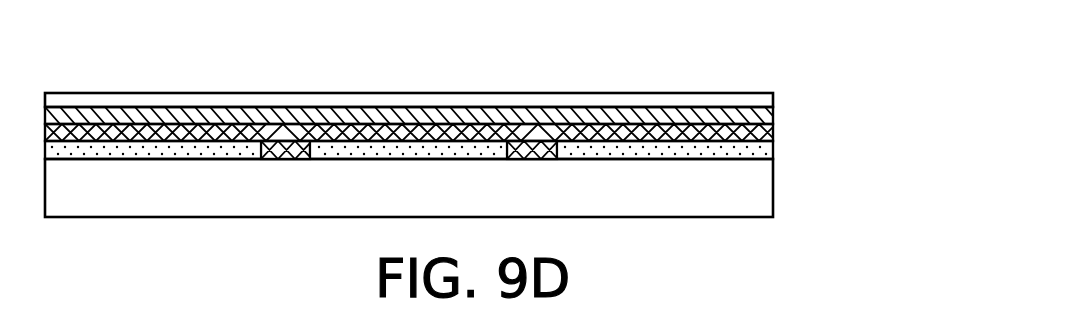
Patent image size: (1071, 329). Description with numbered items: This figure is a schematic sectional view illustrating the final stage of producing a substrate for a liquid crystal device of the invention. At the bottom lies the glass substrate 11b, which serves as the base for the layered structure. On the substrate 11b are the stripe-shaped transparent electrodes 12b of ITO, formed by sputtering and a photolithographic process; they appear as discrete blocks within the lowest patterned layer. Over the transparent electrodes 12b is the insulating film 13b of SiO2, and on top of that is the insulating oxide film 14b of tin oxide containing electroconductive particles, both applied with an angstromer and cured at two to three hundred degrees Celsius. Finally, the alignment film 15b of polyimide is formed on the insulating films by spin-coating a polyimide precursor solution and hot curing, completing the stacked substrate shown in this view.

The substrate 11b is at (774, 193).
The transparent electrodes 12b is at (774, 150).
The insulating film 13b is at (776, 129).
The insulating oxide film 14b is at (775, 120).
The alignment film 15b is at (752, 95).